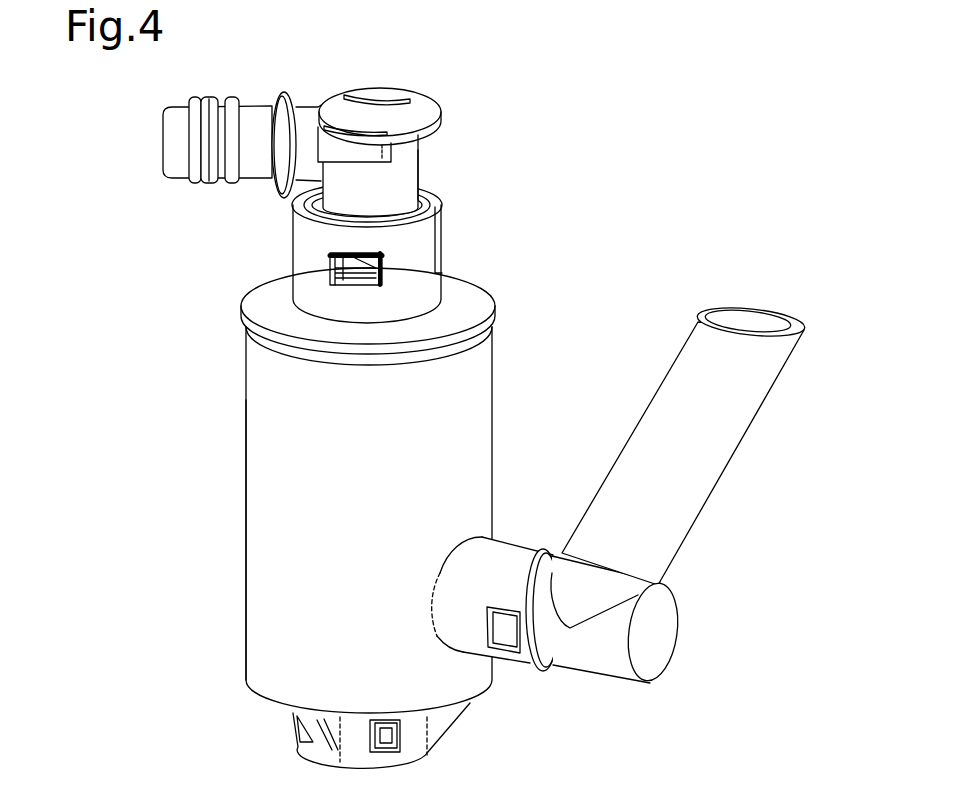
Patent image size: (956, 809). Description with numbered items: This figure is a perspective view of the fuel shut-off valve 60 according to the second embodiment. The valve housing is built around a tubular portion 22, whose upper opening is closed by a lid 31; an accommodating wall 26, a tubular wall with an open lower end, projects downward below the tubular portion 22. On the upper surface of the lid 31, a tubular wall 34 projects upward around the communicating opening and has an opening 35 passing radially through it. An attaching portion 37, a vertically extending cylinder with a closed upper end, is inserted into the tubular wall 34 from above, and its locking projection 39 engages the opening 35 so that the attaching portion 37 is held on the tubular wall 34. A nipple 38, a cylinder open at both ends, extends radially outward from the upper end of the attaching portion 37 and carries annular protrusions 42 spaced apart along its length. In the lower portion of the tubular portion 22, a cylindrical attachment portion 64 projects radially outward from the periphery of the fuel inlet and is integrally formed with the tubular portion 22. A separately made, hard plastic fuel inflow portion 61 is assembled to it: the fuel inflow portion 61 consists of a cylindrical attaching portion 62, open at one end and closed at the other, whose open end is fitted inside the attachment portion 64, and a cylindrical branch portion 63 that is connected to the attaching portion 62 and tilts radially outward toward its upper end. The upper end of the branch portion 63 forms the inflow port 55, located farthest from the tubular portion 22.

The tubular portion 22 is at (246, 486).
The accommodating wall 26 is at (412, 747).
The lid 31 is at (248, 297).
The tubular wall 34 is at (293, 246).
The opening 35 is at (360, 251).
The attaching portion 37 is at (407, 160).
The nipple 38 is at (208, 167).
The locking projection 39 is at (341, 258).
The annular protrusions 42 is at (233, 185).
The inflow port 55 is at (775, 328).
The fuel shut-off valve 60 is at (194, 405).
The fuel inflow portion 61 is at (666, 469).
The attaching portion 62 is at (663, 612).
The branch portion 63 is at (666, 552).
The attachment portion 64 is at (505, 546).